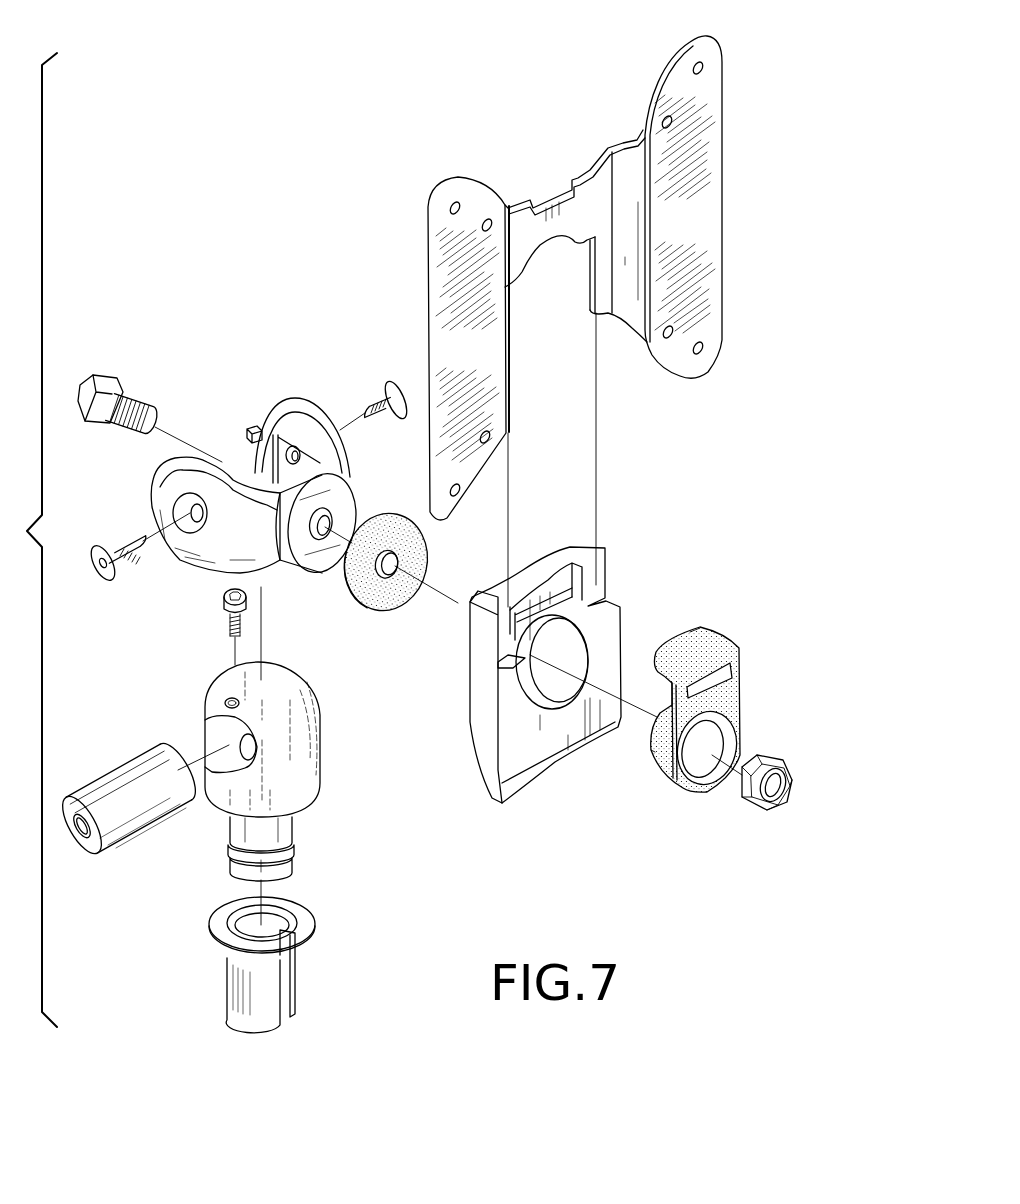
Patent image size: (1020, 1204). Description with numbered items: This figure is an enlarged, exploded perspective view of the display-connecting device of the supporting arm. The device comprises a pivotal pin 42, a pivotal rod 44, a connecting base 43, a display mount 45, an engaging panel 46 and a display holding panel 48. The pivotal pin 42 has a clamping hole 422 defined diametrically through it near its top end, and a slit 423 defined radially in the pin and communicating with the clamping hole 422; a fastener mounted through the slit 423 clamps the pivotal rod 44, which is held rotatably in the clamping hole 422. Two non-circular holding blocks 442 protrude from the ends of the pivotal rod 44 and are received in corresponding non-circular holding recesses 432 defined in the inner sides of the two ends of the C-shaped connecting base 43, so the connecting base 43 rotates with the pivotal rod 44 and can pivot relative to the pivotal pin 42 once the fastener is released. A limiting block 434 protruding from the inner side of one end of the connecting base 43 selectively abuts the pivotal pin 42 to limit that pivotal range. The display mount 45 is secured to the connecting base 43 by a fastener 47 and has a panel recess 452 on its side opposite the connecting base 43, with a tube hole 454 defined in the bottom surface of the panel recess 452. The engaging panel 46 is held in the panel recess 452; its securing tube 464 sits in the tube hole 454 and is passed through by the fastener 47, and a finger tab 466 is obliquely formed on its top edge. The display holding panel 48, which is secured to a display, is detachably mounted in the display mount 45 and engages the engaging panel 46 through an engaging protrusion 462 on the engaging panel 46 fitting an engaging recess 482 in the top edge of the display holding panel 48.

The display holding panel 48 is at (575, 321).
The engaging recess 482 is at (553, 196).
The fastener 47 is at (113, 376).
The limiting block 434 is at (254, 427).
The holding recess 432 is at (282, 442).
The connecting base 43 is at (272, 507).
The panel recess 452 is at (604, 606).
The tube hole 454 is at (565, 637).
The finger tab 466 is at (710, 634).
The engaging protrusion 462 is at (718, 684).
The securing tube 464 is at (657, 762).
The engaging panel 46 is at (692, 730).
The display mount 45 is at (549, 687).
The pivotal pin 42 is at (255, 756).
The slit 423 is at (206, 723).
The clamping hole 422 is at (256, 762).
The pivotal rod 44 is at (142, 835).
The holding block 442 is at (97, 846).